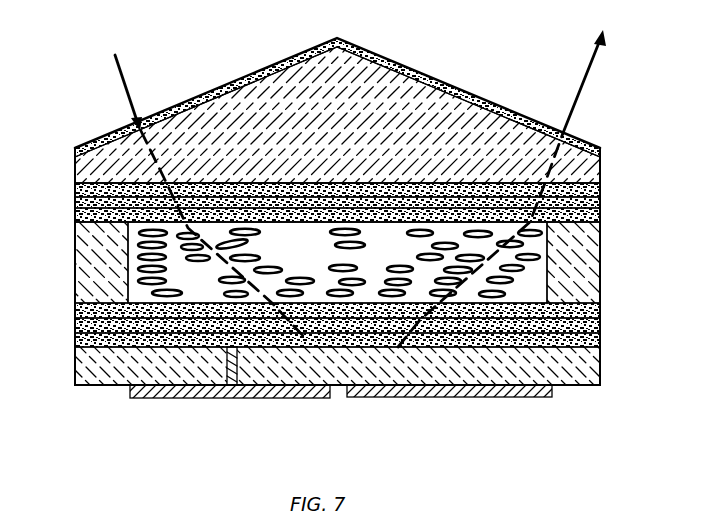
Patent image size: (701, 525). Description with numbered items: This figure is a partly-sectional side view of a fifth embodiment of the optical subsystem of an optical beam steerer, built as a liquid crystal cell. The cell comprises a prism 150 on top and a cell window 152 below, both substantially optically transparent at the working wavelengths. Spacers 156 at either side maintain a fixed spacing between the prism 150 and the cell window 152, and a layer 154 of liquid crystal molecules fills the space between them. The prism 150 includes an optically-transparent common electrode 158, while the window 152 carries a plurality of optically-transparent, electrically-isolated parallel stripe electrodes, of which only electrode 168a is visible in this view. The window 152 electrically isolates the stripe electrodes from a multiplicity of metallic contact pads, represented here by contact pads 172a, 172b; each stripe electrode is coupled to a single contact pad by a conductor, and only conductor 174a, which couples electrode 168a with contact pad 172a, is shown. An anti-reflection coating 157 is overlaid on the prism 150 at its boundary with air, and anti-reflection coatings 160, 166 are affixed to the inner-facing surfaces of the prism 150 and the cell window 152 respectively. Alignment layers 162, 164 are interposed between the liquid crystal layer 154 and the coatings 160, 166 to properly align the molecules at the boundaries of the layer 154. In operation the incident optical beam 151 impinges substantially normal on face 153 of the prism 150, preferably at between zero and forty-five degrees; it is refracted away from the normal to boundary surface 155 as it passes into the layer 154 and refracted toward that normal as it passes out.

The prism 150 is at (440, 88).
The incident optical beam 151 is at (127, 82).
The cell window 152 is at (340, 367).
The face of prism 153 is at (302, 56).
The layer of liquid crystal molecules 154 is at (337, 262).
The boundary surface 155 is at (233, 184).
The spacers 156 is at (86, 270).
The anti-reflection coating 157 is at (371, 62).
The common electrode 158 is at (366, 202).
The anti-reflection coating 160 is at (307, 203).
The alignment layer 162 is at (293, 214).
The alignment layer 164 is at (207, 301).
The anti-reflection coating 166 is at (76, 326).
The electrode 168a is at (602, 338).
The contact pad 172a is at (200, 400).
The contact pad 172b is at (482, 398).
The conductor 174a is at (238, 361).